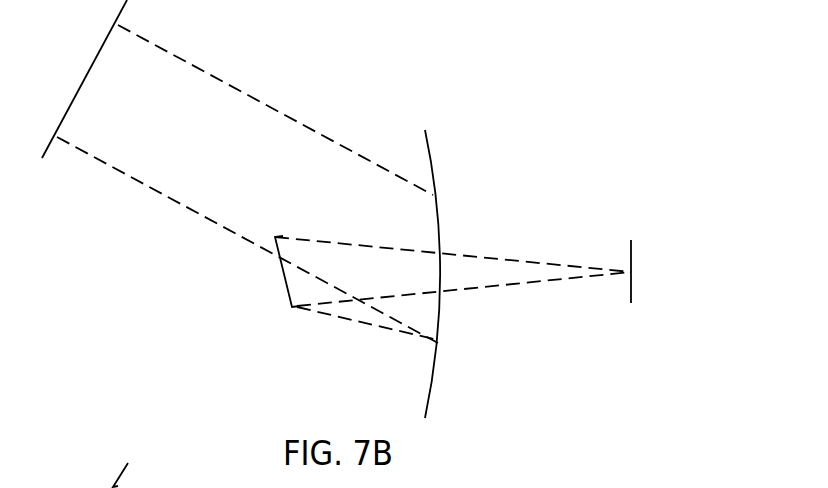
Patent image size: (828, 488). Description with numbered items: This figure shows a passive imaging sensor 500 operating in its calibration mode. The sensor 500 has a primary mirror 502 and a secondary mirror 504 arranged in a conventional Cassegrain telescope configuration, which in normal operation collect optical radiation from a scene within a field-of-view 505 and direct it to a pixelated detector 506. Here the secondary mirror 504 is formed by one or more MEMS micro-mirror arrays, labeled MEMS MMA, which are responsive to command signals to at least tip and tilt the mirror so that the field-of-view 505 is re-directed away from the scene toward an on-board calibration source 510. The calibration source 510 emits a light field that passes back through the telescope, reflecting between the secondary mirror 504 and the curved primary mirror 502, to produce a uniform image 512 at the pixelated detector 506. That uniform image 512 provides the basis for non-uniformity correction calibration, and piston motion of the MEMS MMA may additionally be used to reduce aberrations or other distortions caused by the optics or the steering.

The passive imaging sensor 500 is at (578, 77).
The primary mirror 502 is at (432, 162).
The secondary mirror 504 is at (283, 273).
The field-of-view 505 is at (188, 206).
The pixelated detector 506 is at (633, 259).
The on-board calibration source 510 is at (85, 80).
The uniform image 512 is at (509, 262).